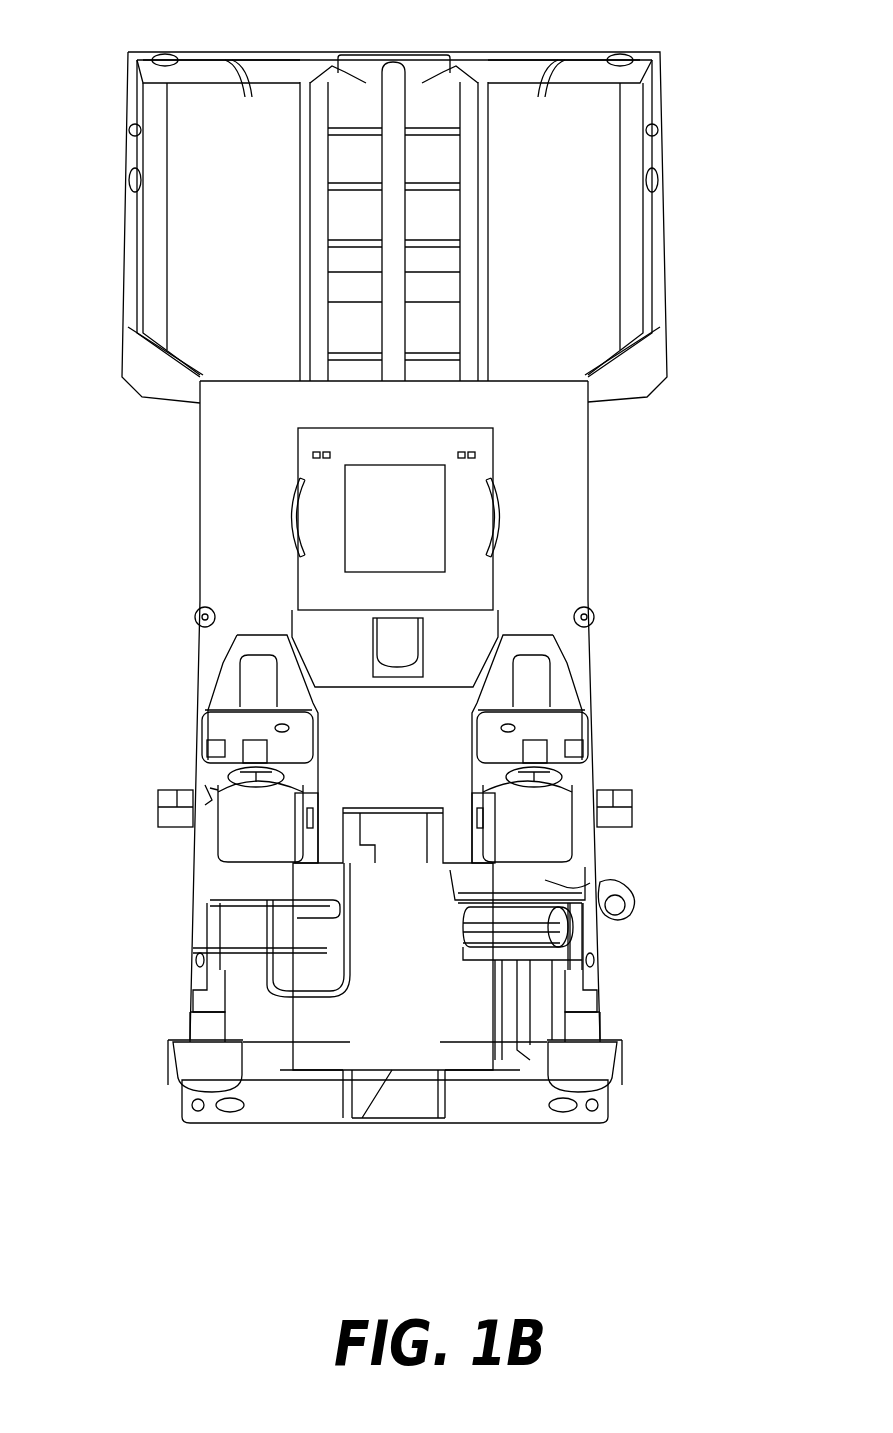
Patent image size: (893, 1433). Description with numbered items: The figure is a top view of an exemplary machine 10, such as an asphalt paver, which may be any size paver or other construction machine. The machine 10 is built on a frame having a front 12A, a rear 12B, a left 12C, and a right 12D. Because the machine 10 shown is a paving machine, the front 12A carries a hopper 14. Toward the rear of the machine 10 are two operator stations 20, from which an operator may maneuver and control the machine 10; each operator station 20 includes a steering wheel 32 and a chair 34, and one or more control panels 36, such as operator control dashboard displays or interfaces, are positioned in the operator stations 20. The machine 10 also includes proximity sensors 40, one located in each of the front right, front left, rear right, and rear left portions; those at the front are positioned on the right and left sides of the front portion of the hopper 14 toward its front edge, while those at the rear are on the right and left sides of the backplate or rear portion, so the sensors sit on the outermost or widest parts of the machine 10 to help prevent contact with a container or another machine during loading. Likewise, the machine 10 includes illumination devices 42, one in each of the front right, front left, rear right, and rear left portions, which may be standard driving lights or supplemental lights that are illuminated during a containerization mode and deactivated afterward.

The machine 10 is at (658, 625).
The front 12A is at (291, 47).
The rear 12B is at (413, 1130).
The left 12C is at (203, 841).
The right 12D is at (645, 684).
The hopper 14 is at (665, 290).
The operator station 20 is at (206, 839).
The steering wheel 32 is at (228, 768).
The chair 34 is at (243, 872).
The control panel 36 is at (207, 745).
The proximity sensor 40 is at (166, 54).
The illumination device 42 is at (130, 134).